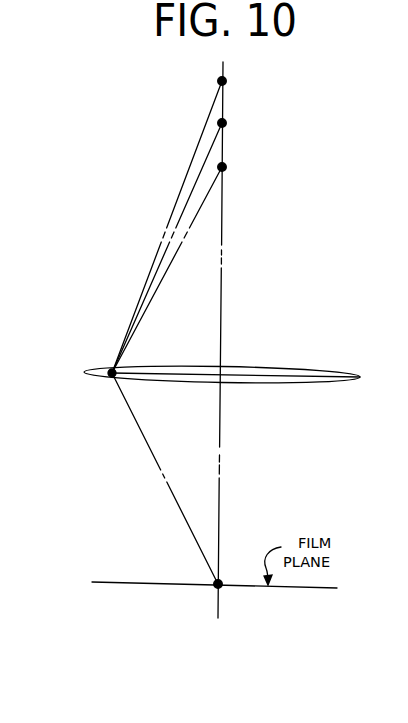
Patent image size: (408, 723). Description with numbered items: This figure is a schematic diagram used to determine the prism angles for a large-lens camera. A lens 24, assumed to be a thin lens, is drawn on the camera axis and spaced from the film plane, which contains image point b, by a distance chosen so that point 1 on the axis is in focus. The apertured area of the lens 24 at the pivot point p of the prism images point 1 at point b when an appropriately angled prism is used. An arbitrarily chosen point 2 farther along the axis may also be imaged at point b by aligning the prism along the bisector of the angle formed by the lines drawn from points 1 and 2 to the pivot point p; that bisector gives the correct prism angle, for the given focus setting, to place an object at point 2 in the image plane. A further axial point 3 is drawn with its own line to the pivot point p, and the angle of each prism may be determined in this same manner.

The point 1 is at (244, 178).
The point 2 is at (244, 91).
The object point 3 on optical axis 3 is at (244, 135).
The lens 24 is at (285, 381).
The pivot point p is at (107, 378).
The point b is at (220, 588).